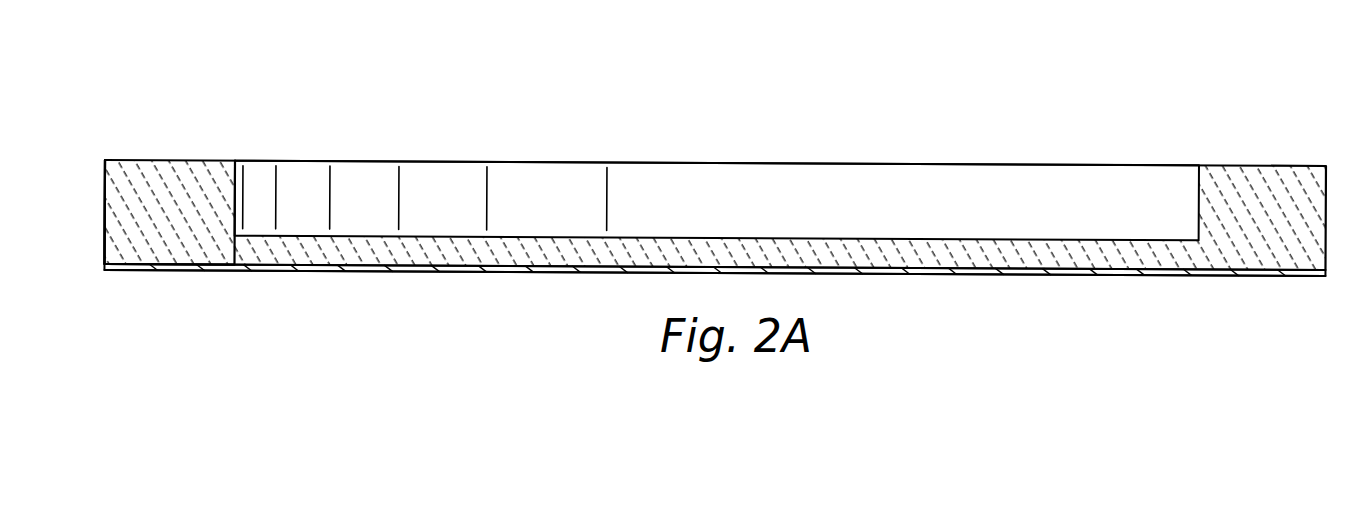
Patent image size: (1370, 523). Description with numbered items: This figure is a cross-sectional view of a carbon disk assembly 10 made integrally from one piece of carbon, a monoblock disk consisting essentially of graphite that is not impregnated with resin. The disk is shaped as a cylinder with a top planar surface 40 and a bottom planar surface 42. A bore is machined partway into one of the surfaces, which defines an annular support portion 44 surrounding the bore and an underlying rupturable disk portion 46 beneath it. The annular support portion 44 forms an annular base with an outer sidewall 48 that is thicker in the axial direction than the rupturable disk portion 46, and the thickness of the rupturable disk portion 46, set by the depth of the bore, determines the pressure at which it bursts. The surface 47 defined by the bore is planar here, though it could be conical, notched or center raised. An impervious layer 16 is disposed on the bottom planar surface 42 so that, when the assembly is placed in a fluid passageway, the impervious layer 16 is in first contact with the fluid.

The disk assembly 10 is at (327, 76).
The top planar surface 40 is at (1249, 166).
The bottom planar surface 42 is at (1257, 277).
The annular support portion 44 is at (235, 150).
The rupturable disk portion 46 is at (1199, 157).
The surface 47 is at (822, 236).
The outer sidewall 48 is at (105, 224).
The impervious layer 16 is at (1312, 278).